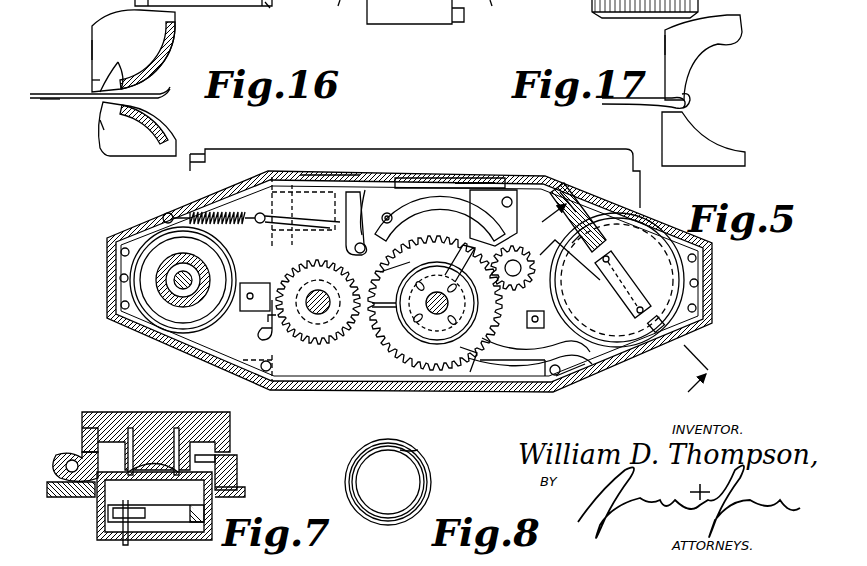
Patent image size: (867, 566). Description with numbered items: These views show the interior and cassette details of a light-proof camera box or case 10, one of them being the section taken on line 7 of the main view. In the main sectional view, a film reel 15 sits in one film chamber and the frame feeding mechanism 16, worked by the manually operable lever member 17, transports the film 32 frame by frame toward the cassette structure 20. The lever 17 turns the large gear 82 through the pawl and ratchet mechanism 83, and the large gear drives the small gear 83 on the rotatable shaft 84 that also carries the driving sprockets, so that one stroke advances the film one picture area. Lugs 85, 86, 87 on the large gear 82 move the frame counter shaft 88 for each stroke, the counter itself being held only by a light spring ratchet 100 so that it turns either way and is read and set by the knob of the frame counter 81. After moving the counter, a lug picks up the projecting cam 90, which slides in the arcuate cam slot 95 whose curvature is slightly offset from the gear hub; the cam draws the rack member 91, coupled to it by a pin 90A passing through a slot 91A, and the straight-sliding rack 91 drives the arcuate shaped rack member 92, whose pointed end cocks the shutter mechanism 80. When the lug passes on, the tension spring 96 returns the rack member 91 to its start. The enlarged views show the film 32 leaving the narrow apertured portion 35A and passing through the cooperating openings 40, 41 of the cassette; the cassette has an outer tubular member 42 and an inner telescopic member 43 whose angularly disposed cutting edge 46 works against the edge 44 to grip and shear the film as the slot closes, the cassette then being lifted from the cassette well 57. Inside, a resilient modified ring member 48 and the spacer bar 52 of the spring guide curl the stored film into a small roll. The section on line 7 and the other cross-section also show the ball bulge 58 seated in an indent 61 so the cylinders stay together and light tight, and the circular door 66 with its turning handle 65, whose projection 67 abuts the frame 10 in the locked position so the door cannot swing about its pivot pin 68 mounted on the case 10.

In FIG. 16, the camera box 10 is at (86, 52).
In FIG. 17, the camera box 10 is at (660, 44).
In FIG. 5, the camera box 10 is at (104, 284).
In FIG. 7, the camera box 10 is at (242, 466).
In FIG. 5, the film reel 15 is at (238, 170).
In FIG. 5, the frame feeding mechanism 16 is at (372, 172).
In FIG. 16, the manually operable lever member 17 is at (349, 14).
In FIG. 5, the manually operable lever member 17 is at (552, 384).
In FIG. 5, the cassette structure 20 is at (617, 280).
In FIG. 16, the film 32 is at (52, 99).
In FIG. 17, the film 32 is at (608, 106).
In FIG. 16, the apertured portion 35A is at (104, 112).
In FIG. 16, the truncated triangular opening 40 is at (162, 99).
In FIG. 16, the rectangular opening 41 is at (118, 108).
In FIG. 16, the outer tubular member 42 is at (160, 142).
In FIG. 7, the outer tubular member 42 is at (97, 512).
In FIG. 8, the outer tubular member 42 is at (400, 426).
In FIG. 16, the inner cooperating telescopic member 43 is at (172, 46).
In FIG. 7, the inner cooperating telescopic member 43 is at (156, 501).
In FIG. 8, the inner cooperating telescopic member 43 is at (388, 450).
In FIG. 16, the edge 44 is at (92, 80).
In FIG. 16, the angularly disposed cutting edge 46 is at (132, 90).
In FIG. 7, the resilient modified ring member 48 is at (192, 498).
In FIG. 7, the spacer bar 52 is at (122, 540).
In FIG. 16, the cassette well 57 is at (150, 35).
In FIG. 17, the cassette well 57 is at (720, 38).
In FIG. 8, the ball bulge 58 is at (414, 452).
In FIG. 8, the indent 61 is at (360, 452).
In FIG. 7, the turning handle 65 is at (165, 412).
In FIG. 16, the circular door 66 is at (274, 10).
In FIG. 7, the circular door 66 is at (90, 412).
In FIG. 7, the projection 67 is at (215, 458).
In FIG. 5, the pivot pin 68 is at (580, 192).
In FIG. 7, the pivot pin 68 is at (76, 454).
In FIG. 5, the section line 7 is at (619, 284).
In FIG. 5, the shutter mechanism 80 is at (455, 180).
In FIG. 17, the frame counter 81 is at (492, 12).
In FIG. 5, the large gear 82 is at (412, 344).
In FIG. 5, the pawl and ratchet mechanism 83 is at (440, 344).
In FIG. 5, the rotatable shaft 84 is at (516, 276).
In FIG. 5, the lug 85 is at (470, 368).
In FIG. 5, the lug 86 is at (500, 278).
In FIG. 5, the lug 87 is at (395, 312).
In FIG. 5, the frame counter shaft 88 is at (318, 308).
In FIG. 5, the projecting cam 90 is at (385, 270).
In FIG. 5, the pin 90A is at (352, 190).
In FIG. 5, the rack member 91 is at (330, 186).
In FIG. 5, the slot 91A is at (378, 188).
In FIG. 5, the arcuate shaped rack member 92 is at (412, 180).
In FIG. 5, the arcuate cam slot 95 is at (418, 214).
In FIG. 5, the tension spring 96 is at (240, 228).
In FIG. 5, the light spring ratchet 100 is at (262, 326).